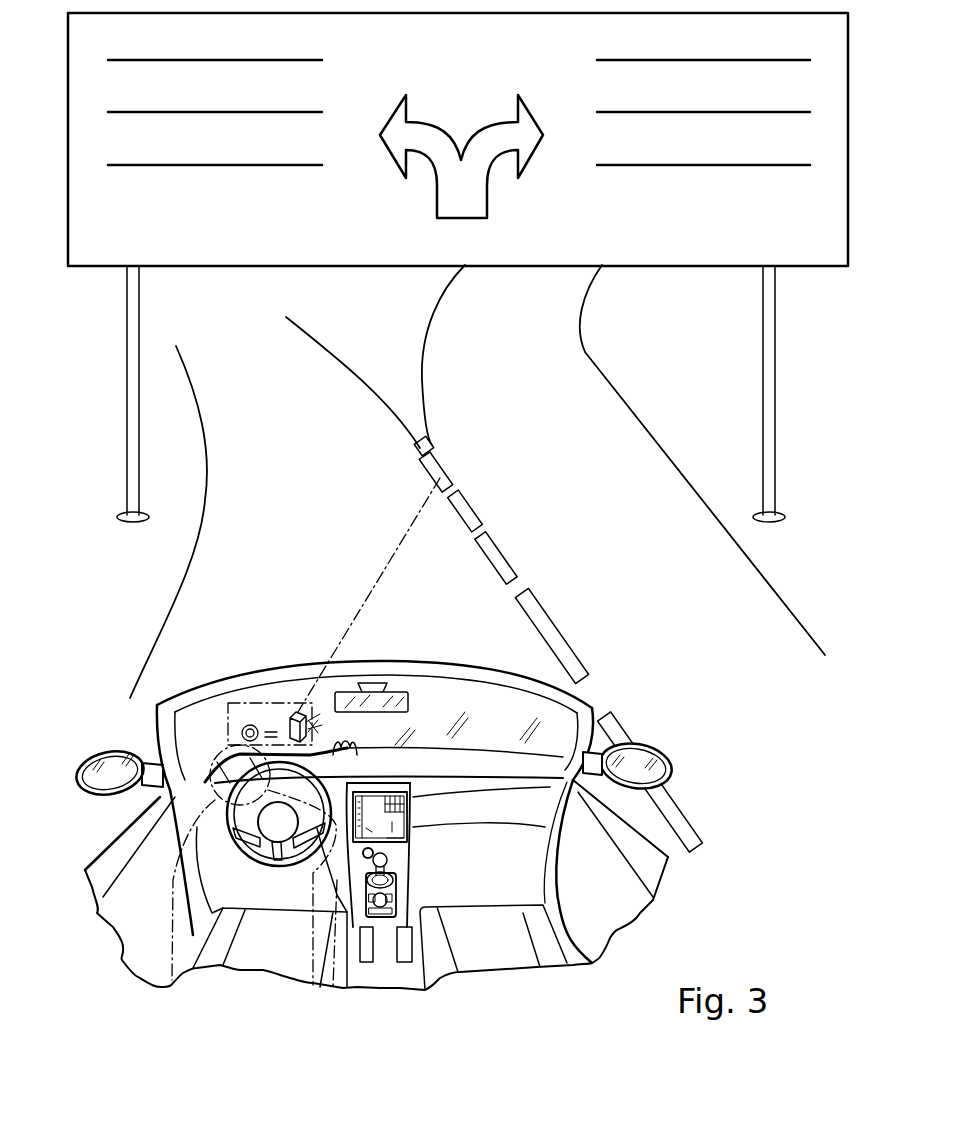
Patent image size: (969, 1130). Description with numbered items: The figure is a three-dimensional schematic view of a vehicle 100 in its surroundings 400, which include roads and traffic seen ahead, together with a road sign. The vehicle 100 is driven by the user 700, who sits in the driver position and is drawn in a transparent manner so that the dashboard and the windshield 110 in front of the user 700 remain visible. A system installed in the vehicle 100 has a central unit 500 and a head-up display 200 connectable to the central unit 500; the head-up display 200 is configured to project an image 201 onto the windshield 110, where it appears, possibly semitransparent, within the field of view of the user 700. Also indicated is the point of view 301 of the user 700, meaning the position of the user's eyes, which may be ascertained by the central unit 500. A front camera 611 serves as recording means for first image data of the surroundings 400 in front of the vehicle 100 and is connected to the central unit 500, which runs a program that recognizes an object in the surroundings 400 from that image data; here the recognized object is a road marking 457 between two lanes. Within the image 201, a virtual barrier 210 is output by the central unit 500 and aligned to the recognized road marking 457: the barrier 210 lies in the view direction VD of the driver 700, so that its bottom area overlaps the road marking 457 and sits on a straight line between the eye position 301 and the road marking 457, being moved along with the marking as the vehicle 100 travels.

The vehicle 100 is at (365, 842).
The windshield 110 is at (505, 710).
The head-up display 200 is at (345, 776).
The image 201 is at (256, 700).
The virtual barrier 210 is at (312, 706).
The point of view 301 is at (262, 753).
The surroundings 400 is at (840, 577).
The road marking 457 is at (447, 460).
The central unit 500 is at (397, 843).
The front camera 611 is at (352, 745).
The user 700 is at (170, 920).
The view direction VD is at (358, 608).